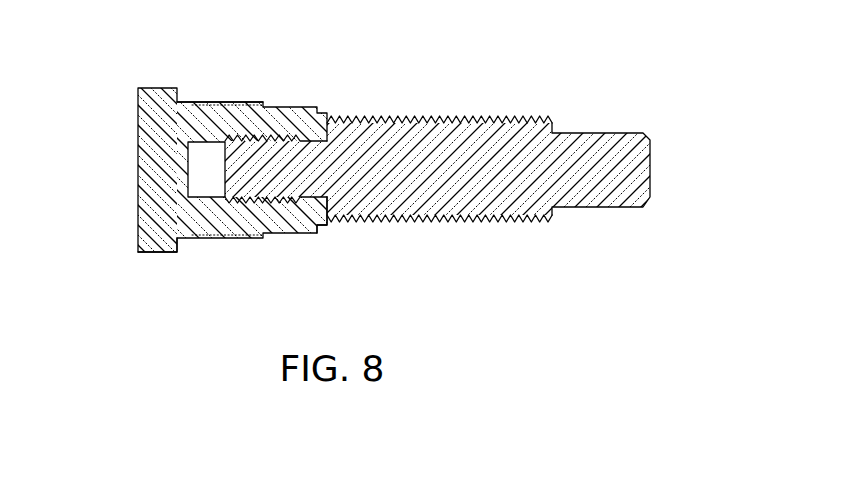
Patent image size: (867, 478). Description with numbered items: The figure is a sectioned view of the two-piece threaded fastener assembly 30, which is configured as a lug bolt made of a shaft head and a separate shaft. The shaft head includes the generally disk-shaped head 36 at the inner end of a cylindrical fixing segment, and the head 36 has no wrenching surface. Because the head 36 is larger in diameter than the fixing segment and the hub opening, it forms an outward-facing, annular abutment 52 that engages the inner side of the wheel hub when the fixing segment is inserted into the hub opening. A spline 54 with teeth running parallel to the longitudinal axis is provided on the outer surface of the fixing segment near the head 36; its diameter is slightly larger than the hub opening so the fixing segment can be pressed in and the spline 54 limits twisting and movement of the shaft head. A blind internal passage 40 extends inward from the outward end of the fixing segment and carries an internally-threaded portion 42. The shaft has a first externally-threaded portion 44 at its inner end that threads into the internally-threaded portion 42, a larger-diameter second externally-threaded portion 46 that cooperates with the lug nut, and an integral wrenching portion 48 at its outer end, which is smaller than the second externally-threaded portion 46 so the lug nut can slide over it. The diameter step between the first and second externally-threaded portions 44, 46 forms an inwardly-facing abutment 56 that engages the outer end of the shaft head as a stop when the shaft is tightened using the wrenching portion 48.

The two-piece threaded fastener assembly 30 is at (686, 117).
The head 36 is at (138, 211).
The internal passage 40 is at (188, 145).
The internally-threaded portion 42 is at (250, 205).
The first externally-threaded portion 44 is at (286, 121).
The second externally-threaded portion 46 is at (464, 117).
The wrenching portion 48 is at (585, 208).
The abutment 52 is at (178, 252).
The spline 54 is at (224, 102).
The abutment 56 is at (327, 205).